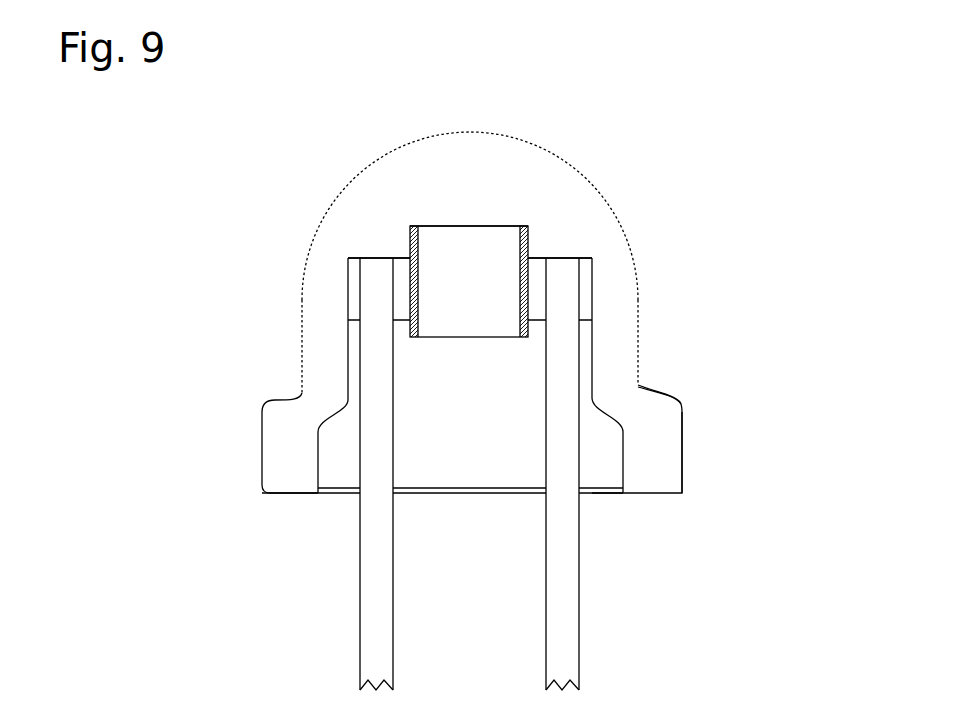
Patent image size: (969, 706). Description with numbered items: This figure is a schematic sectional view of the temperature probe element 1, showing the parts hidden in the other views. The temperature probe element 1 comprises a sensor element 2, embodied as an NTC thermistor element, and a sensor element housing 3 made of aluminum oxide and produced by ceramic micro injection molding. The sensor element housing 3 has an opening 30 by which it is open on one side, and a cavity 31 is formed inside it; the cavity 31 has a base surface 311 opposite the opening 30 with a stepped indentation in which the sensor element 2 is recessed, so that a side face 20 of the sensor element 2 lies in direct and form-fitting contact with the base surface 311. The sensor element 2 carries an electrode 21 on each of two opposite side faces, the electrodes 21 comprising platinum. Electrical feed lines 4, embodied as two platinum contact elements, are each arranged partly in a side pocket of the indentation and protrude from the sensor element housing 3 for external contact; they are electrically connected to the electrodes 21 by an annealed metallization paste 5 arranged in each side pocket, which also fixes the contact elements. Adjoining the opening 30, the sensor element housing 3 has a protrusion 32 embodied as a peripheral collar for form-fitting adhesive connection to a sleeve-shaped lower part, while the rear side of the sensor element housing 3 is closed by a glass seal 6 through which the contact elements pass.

The temperature probe element 1 is at (193, 150).
The sensor element 2 is at (485, 275).
The side face 20 is at (473, 226).
The electrode 21 is at (408, 273).
The sensor element housing 3 is at (313, 363).
The opening 30 is at (497, 497).
The cavity 31 is at (500, 381).
The base surface 311 is at (447, 228).
The protrusion 32 is at (650, 461).
The electrical feed lines 4 is at (380, 628).
The metallization paste 5 is at (530, 283).
The glass seal 6 is at (343, 473).